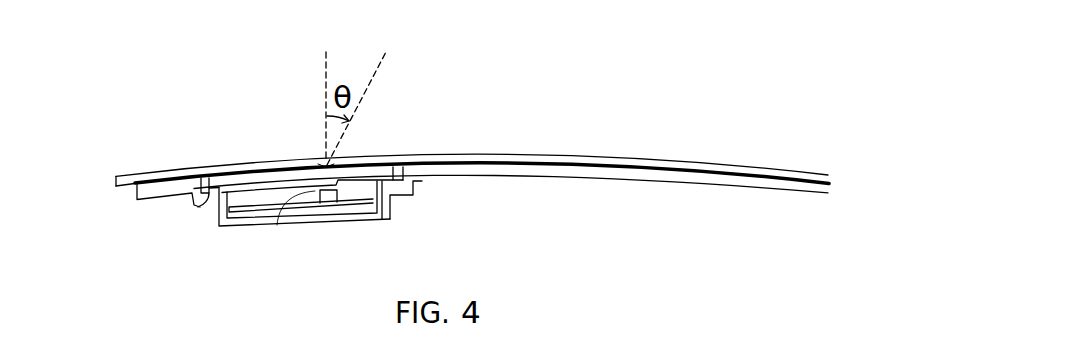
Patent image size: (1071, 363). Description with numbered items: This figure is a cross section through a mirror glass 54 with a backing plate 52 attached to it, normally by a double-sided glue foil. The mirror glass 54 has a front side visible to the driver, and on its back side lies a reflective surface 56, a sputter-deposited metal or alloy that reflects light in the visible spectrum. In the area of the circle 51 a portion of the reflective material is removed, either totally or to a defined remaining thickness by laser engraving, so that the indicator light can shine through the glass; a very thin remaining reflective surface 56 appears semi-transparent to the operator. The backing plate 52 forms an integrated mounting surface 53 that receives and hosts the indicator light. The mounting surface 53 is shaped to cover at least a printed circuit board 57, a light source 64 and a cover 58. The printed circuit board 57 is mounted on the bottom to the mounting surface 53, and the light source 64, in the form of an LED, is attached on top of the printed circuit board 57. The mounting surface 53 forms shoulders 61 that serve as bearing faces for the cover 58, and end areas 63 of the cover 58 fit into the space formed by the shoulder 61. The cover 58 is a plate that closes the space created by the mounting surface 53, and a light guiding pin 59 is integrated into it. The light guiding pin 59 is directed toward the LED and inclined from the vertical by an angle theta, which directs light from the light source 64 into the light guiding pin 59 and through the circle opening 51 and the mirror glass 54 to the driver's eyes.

The circle 51 is at (322, 166).
The backing plate 52 is at (532, 177).
The mounting surface 53 is at (375, 220).
The mirror glass 54 is at (760, 167).
The reflective surface 56 is at (642, 158).
The printed circuit board 57 is at (238, 225).
The cover 58 is at (199, 207).
The light guiding pin 59 is at (277, 225).
The shoulder 61 is at (421, 183).
The end area 63 is at (399, 168).
The light source 64 is at (326, 203).